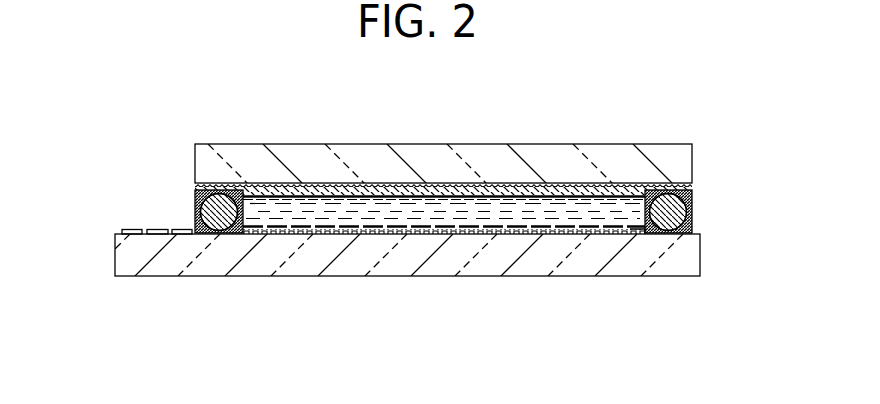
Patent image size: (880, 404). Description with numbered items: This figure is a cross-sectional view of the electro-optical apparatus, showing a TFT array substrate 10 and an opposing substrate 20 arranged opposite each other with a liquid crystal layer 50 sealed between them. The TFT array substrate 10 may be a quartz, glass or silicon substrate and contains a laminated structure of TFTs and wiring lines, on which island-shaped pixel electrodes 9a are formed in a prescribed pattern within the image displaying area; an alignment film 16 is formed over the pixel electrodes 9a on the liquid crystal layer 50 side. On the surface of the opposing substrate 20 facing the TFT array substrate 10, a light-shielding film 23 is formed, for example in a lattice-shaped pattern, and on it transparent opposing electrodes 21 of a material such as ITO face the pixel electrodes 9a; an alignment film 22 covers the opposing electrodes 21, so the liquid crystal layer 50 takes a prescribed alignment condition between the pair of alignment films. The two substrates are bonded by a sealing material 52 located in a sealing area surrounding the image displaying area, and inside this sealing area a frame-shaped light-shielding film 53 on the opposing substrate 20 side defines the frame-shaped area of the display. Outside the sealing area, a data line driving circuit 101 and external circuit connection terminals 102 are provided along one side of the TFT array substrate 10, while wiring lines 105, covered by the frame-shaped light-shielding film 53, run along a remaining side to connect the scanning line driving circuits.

The TFT array substrate 10 is at (457, 263).
The opposing substrate 20 is at (337, 150).
The opposing electrodes 21 is at (565, 190).
The alignment film 22 is at (493, 207).
The light-shielding film 23 is at (437, 183).
The frame-shaped light-shielding film 53 is at (263, 185).
The sealing material 52 is at (195, 213).
The liquid crystal layer 50 is at (387, 224).
The pixel electrodes 9a is at (323, 237).
The alignment film 16 is at (543, 220).
The wiring lines 105 is at (637, 237).
The data line driving circuit 101 is at (170, 230).
The external circuit connection terminals 102 is at (132, 230).